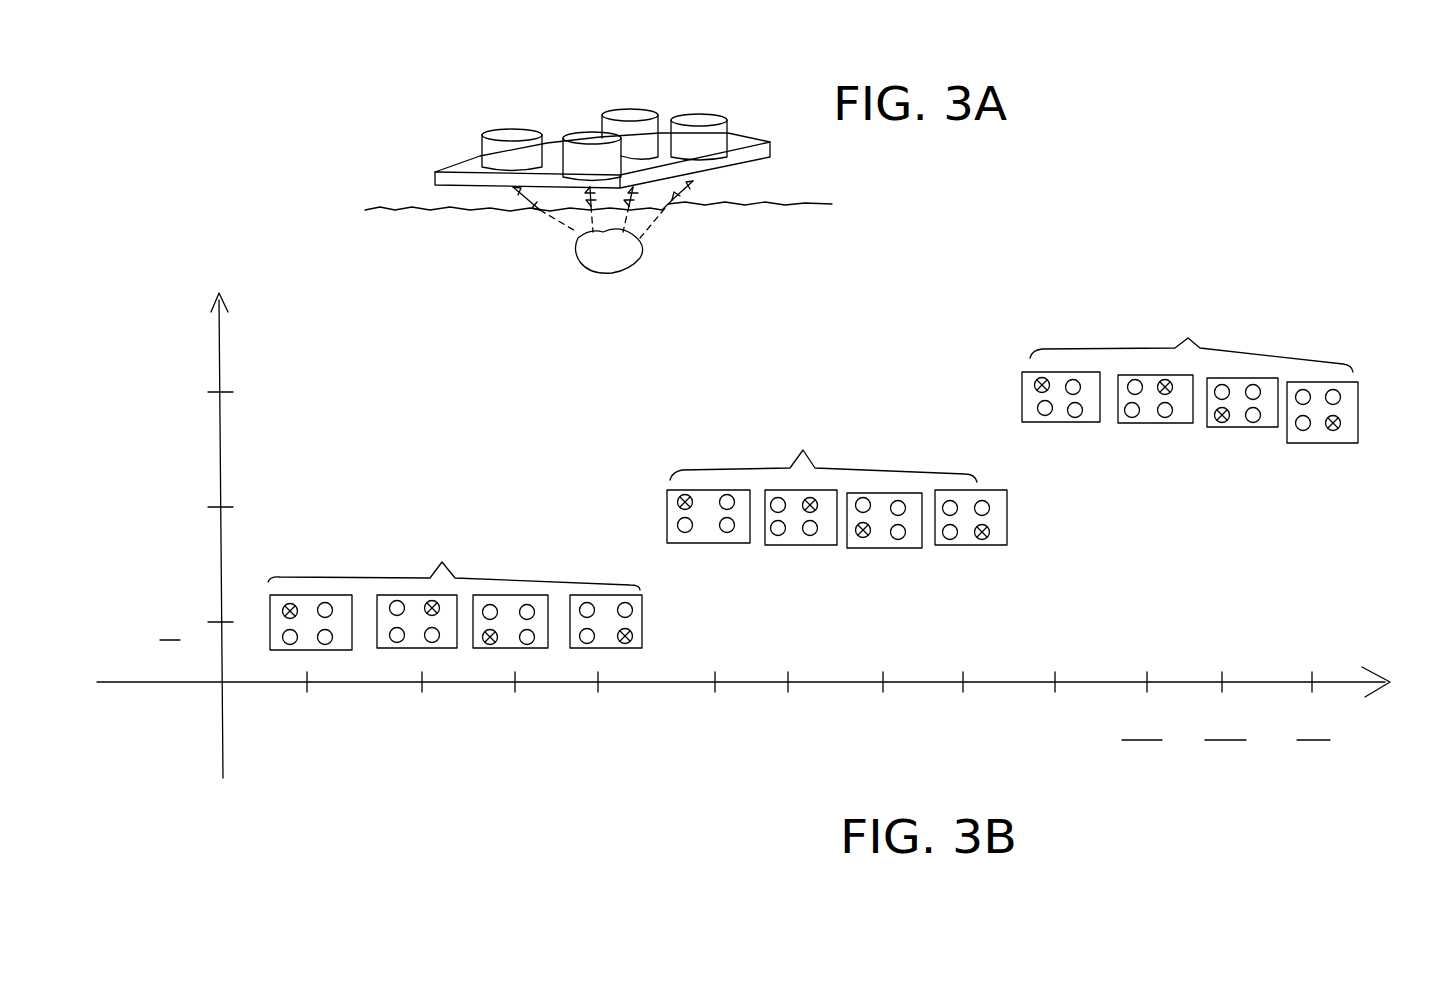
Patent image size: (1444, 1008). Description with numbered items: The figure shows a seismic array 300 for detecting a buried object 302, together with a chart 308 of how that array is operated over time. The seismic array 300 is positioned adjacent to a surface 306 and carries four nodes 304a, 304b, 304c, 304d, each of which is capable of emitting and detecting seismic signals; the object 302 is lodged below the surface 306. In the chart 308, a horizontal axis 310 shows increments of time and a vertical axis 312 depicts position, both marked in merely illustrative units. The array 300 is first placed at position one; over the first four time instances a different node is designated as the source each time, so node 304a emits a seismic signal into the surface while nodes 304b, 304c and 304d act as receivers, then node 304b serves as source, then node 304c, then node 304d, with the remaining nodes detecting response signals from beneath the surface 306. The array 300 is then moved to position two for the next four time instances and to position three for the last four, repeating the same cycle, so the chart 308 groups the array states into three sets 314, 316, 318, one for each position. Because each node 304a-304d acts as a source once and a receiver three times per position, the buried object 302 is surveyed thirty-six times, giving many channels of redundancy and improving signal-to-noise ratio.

In FIG. 3A, the seismic array 300 is at (476, 64).
In FIG. 3B, the seismic array 300 is at (286, 671).
In FIG. 3A, the buried object 302 is at (640, 247).
In FIG. 3A, the node 304a is at (612, 115).
In FIG. 3B, the node 304a is at (272, 598).
In FIG. 3A, the node 304b is at (717, 127).
In FIG. 3B, the node 304b is at (327, 617).
In FIG. 3A, the node 304c is at (497, 126).
In FIG. 3B, the node 304c is at (287, 643).
In FIG. 3A, the node 304d is at (577, 167).
In FIG. 3B, the node 304d is at (332, 647).
In FIG. 3A, the surface 306 is at (812, 204).
In FIG. 3B, the position versus time graph 308 is at (763, 571).
In FIG. 3B, the horizontal axis 310 is at (1365, 690).
In FIG. 3B, the vertical axis 312 is at (222, 328).
In FIG. 3B, the first group of sensor states 314 is at (393, 649).
In FIG. 3B, the second group of sensor states 316 is at (837, 478).
In FIG. 3B, the third group of sensor states 318 is at (1190, 372).